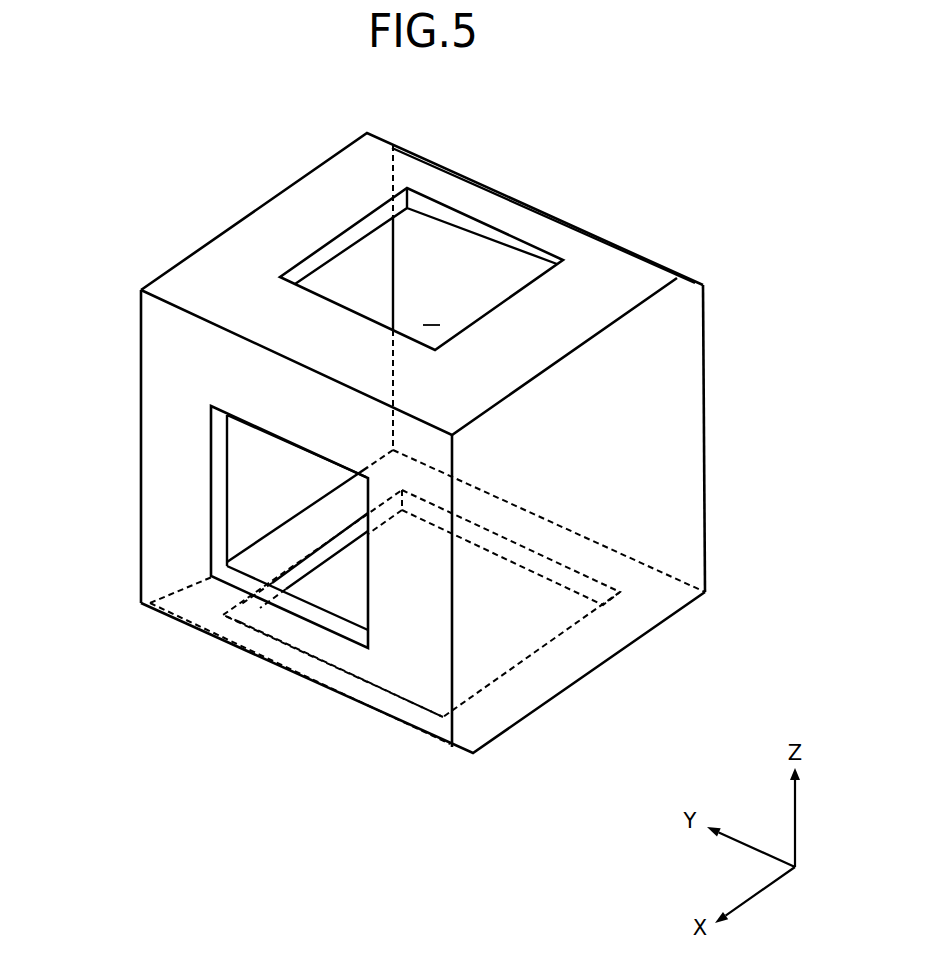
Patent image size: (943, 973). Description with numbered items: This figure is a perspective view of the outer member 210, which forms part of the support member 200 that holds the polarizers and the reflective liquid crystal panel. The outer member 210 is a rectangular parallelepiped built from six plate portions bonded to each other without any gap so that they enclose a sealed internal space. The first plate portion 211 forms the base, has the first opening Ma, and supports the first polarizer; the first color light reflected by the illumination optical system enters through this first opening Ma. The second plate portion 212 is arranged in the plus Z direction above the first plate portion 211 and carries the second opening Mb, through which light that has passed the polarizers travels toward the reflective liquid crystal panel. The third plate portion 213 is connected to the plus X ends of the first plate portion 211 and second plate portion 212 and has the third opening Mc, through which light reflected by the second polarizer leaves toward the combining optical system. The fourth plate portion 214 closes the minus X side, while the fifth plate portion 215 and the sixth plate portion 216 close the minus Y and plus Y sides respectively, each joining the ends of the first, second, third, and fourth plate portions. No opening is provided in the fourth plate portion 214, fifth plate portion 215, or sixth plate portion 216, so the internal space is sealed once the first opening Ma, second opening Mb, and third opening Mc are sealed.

The support member 200 is at (750, 180).
The outer member 210 is at (640, 208).
The first plate portion 211 is at (553, 700).
The second plate portion 212 is at (345, 168).
The third plate portion 213 is at (158, 567).
The fourth plate portion 214 is at (703, 393).
The fifth plate portion 215 is at (620, 489).
The sixth plate portion 216 is at (199, 247).
The first opening Ma is at (573, 577).
The second opening Mb is at (473, 230).
The third opening Mc is at (220, 488).